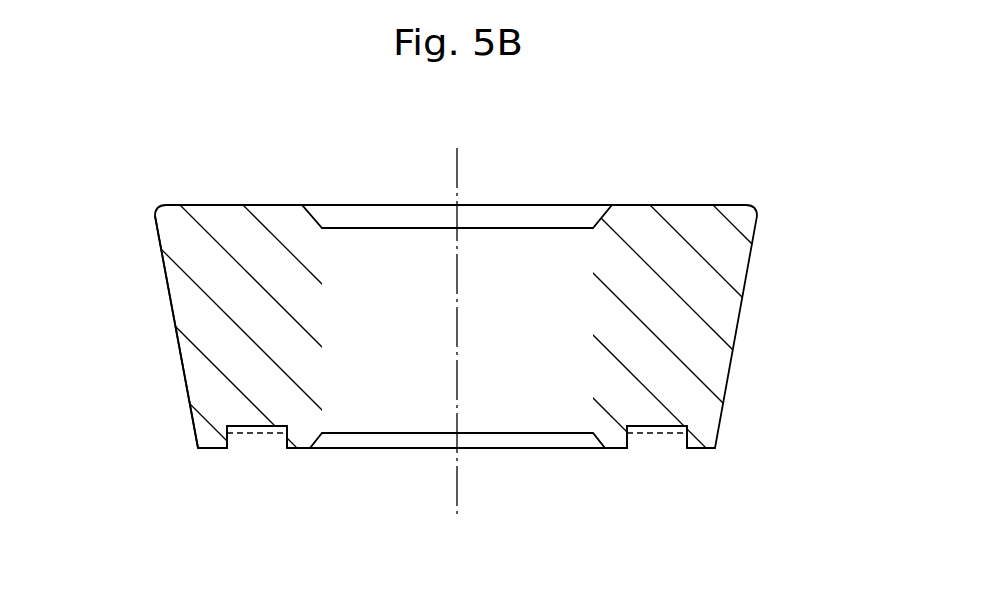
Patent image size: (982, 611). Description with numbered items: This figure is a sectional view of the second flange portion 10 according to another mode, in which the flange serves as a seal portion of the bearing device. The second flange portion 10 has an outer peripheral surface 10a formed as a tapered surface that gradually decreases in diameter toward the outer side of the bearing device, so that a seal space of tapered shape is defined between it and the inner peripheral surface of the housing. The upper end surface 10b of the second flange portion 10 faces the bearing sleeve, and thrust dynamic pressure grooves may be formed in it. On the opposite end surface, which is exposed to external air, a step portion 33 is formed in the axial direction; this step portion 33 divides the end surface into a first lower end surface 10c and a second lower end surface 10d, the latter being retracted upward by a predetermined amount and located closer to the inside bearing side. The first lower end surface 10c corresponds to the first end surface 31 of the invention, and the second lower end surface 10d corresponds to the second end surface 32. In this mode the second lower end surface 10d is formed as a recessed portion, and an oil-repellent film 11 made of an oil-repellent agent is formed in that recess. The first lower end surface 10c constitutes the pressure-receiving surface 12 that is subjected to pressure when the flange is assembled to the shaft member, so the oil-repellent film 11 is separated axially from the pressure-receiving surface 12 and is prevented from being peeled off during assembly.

The second flange portion 10 is at (778, 215).
The outer peripheral surface 10a is at (167, 285).
The upper end surface 10b is at (227, 205).
The first lower end surface 10c is at (297, 448).
The pressure-receiving surface 12 is at (211, 487).
The second lower end surface 10d is at (670, 427).
The oil-repellent film 11 is at (647, 437).
The first end surface 31 is at (617, 448).
The second end surface 32 is at (258, 427).
The step portion 33 is at (233, 440).